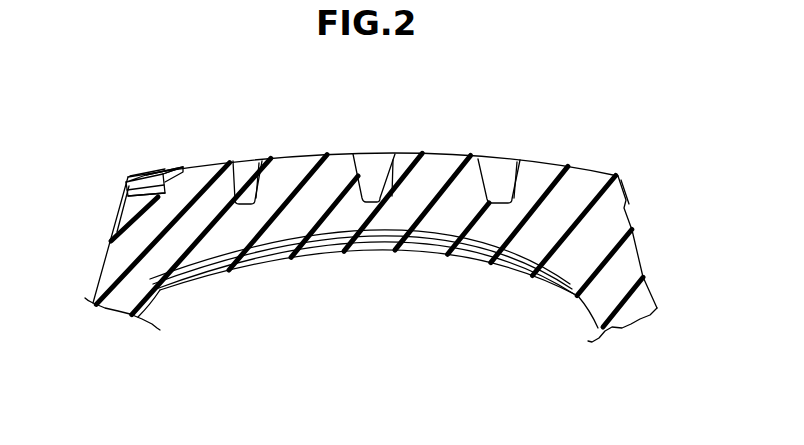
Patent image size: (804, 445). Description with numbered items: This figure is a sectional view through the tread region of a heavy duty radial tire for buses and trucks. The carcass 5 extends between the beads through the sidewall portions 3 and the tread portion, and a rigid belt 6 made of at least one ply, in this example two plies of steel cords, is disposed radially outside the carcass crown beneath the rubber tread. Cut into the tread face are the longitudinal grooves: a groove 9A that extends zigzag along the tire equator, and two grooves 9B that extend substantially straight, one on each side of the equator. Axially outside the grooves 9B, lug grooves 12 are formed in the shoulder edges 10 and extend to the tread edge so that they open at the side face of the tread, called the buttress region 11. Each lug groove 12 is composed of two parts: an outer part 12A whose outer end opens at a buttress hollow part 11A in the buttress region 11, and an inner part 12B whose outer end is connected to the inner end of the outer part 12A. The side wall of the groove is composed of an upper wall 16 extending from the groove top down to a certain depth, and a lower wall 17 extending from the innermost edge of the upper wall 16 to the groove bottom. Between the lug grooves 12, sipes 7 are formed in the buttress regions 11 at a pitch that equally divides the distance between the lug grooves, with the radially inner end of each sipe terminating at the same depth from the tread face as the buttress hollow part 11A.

The sidewall portion 3 is at (655, 300).
The carcass 5 is at (588, 308).
The belt 6 is at (520, 253).
The sipe 7 is at (627, 198).
The longitudinal groove 9A is at (380, 152).
The longitudinal grooves 9B is at (246, 158).
The shoulder edge 10 is at (618, 175).
The buttress region 11 is at (90, 212).
The buttress hollow part 11A is at (110, 217).
The lug groove 12 is at (129, 135).
The outer part 12A is at (123, 190).
The inner part 12B is at (148, 172).
The upper wall 16 is at (158, 172).
The lower wall 17 is at (170, 182).